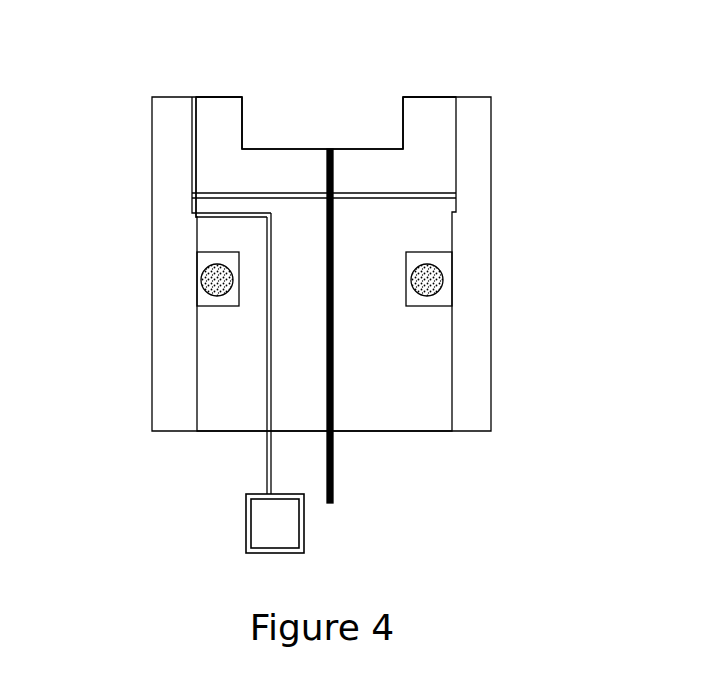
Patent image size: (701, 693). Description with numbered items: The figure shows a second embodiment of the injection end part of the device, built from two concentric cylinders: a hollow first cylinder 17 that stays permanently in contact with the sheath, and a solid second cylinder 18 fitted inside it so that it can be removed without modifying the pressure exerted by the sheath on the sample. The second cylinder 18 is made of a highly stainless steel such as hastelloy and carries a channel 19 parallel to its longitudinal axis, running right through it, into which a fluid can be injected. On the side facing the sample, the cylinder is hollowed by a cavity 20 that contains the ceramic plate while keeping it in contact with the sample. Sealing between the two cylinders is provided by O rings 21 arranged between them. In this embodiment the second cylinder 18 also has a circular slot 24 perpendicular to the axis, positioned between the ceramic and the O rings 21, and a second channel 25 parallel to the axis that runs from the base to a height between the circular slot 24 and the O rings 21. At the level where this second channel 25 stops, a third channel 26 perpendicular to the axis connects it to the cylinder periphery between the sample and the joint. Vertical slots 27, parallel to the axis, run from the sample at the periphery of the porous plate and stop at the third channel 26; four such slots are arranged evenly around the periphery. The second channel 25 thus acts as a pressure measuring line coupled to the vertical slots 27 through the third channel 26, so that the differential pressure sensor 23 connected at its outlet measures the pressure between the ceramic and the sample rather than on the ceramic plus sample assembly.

The first cylinder 17 is at (172, 408).
The second cylinder 18 is at (242, 392).
The channel 19 is at (333, 478).
The cavity 20 is at (348, 125).
The O rings 21 is at (196, 281).
The differential pressure sensor 23 is at (275, 523).
The circular slot 24 is at (457, 197).
The second channel 25 is at (268, 440).
The third channel 26 is at (213, 212).
The vertical slots 27 is at (192, 143).